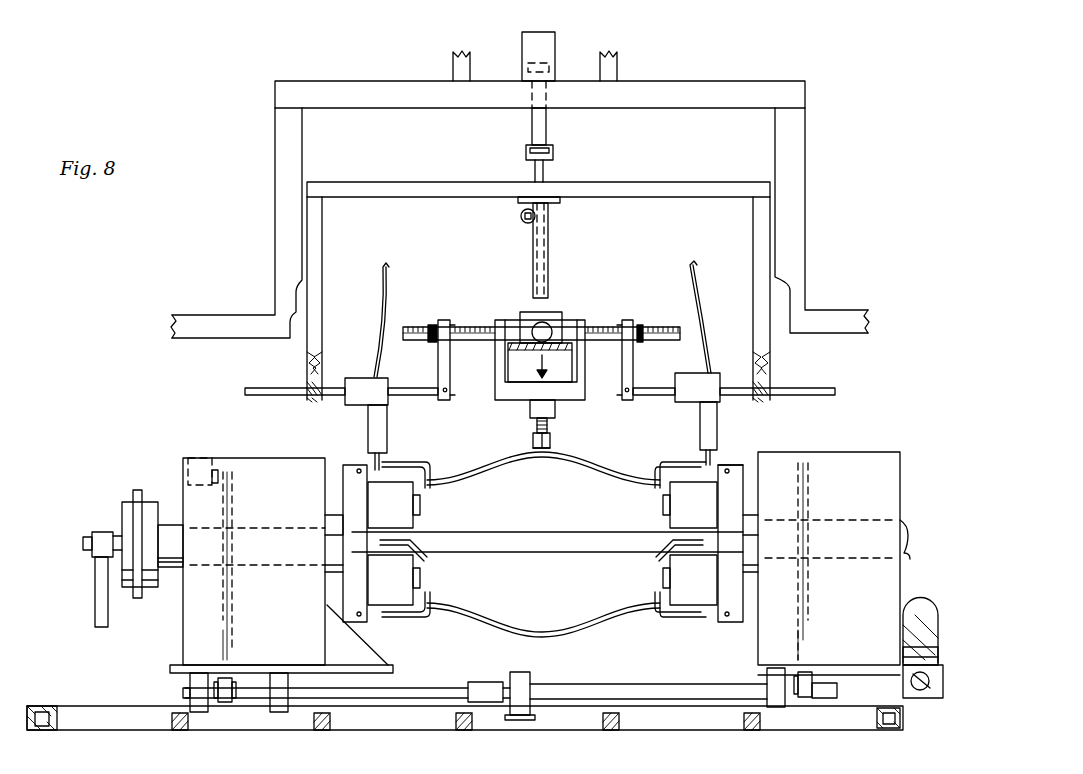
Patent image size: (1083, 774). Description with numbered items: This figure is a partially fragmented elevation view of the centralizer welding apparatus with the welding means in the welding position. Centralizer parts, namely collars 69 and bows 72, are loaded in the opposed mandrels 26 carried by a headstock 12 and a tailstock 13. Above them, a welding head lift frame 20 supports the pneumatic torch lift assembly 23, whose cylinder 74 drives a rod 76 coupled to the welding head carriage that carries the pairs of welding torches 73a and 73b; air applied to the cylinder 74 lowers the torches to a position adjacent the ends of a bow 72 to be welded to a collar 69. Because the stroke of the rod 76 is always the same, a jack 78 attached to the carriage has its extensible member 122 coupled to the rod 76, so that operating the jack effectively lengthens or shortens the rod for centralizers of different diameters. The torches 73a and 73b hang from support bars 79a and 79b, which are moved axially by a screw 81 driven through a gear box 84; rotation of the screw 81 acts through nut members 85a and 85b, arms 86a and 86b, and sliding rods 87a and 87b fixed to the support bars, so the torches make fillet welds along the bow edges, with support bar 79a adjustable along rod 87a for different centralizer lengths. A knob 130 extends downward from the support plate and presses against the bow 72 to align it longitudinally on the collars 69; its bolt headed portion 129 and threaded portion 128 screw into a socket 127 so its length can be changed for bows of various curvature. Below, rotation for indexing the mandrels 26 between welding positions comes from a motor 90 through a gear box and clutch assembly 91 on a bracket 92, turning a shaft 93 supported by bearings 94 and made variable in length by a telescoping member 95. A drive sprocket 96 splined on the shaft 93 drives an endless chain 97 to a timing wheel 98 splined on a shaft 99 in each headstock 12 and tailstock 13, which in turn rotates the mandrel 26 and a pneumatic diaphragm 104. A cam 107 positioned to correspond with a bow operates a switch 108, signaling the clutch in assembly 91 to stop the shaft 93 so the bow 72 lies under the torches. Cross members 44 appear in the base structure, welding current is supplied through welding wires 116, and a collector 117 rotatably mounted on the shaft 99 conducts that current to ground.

The headstock 12 is at (851, 448).
The tailstock 13 is at (250, 452).
The welding head lift frame 20 is at (805, 216).
The torch lift assembly 23 is at (514, 36).
The mandrel 26 is at (733, 449).
The cross members 44 is at (333, 722).
The collar 69 is at (380, 590).
The bow 72 is at (565, 535).
The welding torch 73a is at (368, 432).
The welding torch 73b is at (717, 418).
The cylinder 74 is at (557, 50).
The rod 76 is at (546, 133).
The jack 78 is at (548, 240).
The support bar 79a is at (352, 378).
The support bar 79b is at (712, 373).
The screw 81 is at (462, 327).
The gear box 84 is at (520, 312).
The nut member 85a is at (438, 322).
The nut member 85b is at (630, 320).
The arm 86a is at (453, 377).
The arm 86b is at (633, 368).
The rod 87a is at (415, 387).
The rod 87b is at (652, 395).
The motor 90 is at (925, 601).
The gear box and clutch assembly 91 is at (936, 700).
The bracket 92 is at (903, 658).
The shaft 93 is at (585, 683).
The bearings 94 is at (208, 712).
The telescoping member 95 is at (415, 686).
The drive sprocket 96 is at (232, 702).
The endless chain 97 is at (240, 648).
The timing wheel 98 is at (236, 498).
The shaft 99 is at (252, 566).
The pneumatic diaphragm 104 is at (130, 498).
The cam 107 is at (217, 488).
The switch 108 is at (200, 462).
The welding wires 116 is at (372, 293).
The collector 117 is at (100, 532).
The extensible member 122 is at (548, 168).
The socket 127 is at (530, 408).
The threaded portion 128 is at (537, 425).
The bolt headed portion 129 is at (533, 441).
The knob 130 is at (552, 440).